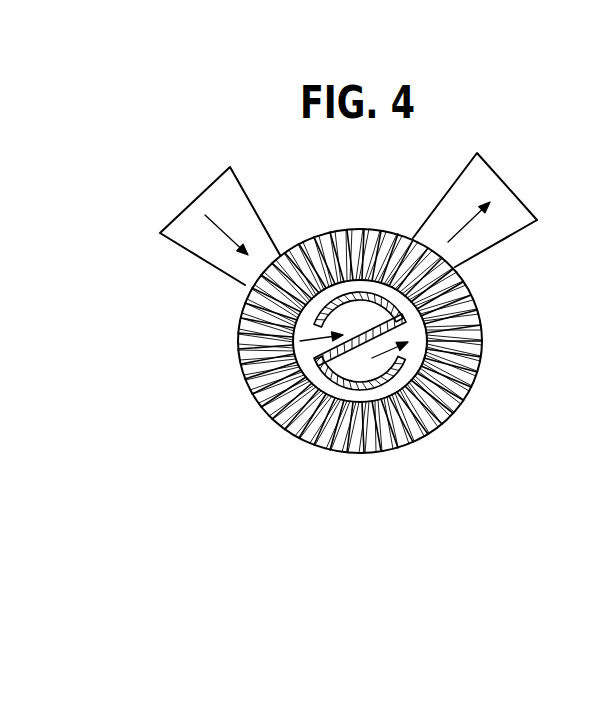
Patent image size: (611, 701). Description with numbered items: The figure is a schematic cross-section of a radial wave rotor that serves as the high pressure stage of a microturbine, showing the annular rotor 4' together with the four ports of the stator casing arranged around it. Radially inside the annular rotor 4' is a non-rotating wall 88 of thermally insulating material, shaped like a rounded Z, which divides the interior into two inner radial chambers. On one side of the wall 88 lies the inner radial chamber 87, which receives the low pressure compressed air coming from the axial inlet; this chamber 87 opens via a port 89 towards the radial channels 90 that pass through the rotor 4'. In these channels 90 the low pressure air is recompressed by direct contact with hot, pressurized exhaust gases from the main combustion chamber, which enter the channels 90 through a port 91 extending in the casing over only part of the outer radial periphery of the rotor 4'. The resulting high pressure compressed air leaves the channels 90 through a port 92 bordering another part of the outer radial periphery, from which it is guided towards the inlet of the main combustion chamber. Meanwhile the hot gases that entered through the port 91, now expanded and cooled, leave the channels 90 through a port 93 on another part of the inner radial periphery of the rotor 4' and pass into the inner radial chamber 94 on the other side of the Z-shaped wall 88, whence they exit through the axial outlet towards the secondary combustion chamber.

The rotor 4' is at (361, 195).
The inner radial chamber 87 is at (362, 373).
The wall 88 is at (387, 322).
The port 89 is at (407, 352).
The radial channels 90 is at (452, 420).
The port 91 is at (192, 238).
The port 92 is at (510, 212).
The port 93 is at (317, 345).
The inner radial chamber 94 is at (367, 313).